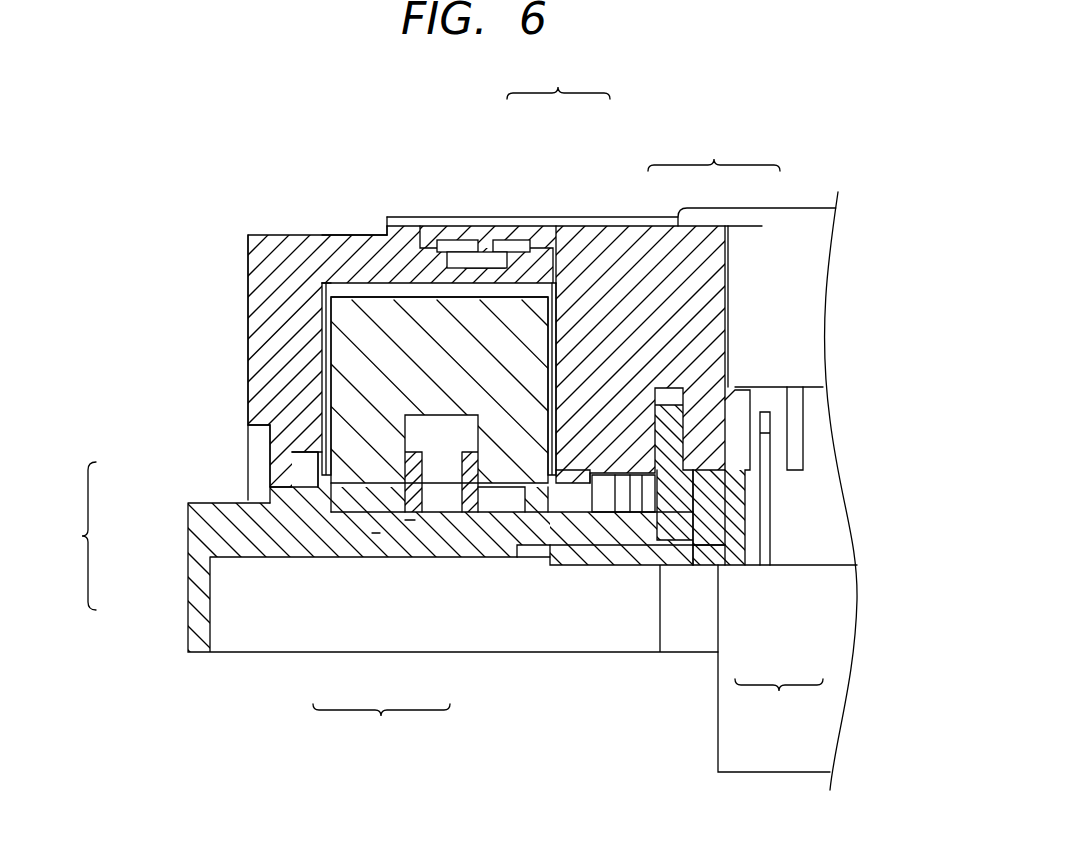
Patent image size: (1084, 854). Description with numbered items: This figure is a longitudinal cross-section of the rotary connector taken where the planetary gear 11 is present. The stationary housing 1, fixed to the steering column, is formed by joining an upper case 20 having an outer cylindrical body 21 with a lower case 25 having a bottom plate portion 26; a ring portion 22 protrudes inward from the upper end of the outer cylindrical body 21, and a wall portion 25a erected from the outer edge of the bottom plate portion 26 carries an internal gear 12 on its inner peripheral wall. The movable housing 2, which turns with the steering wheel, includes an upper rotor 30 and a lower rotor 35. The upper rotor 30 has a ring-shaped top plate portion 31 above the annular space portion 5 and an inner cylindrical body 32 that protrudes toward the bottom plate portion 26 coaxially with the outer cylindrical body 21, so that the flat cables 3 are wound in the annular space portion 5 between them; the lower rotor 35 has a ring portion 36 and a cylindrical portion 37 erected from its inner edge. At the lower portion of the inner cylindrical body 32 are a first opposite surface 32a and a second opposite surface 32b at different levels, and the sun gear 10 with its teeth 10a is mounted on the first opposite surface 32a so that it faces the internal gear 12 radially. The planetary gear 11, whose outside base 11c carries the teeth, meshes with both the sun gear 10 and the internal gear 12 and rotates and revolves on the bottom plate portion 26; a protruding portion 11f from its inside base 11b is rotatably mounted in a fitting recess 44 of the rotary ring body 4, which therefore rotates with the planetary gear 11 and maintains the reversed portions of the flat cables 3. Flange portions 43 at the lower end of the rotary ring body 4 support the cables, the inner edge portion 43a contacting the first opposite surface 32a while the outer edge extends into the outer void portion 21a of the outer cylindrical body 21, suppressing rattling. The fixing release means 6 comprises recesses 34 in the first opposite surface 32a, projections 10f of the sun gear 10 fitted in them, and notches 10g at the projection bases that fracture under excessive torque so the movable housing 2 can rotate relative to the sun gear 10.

The stationary housing 1 is at (80, 536).
The movable housing 2 is at (622, 212).
The flat cables 3 is at (556, 217).
The rotary ring body 4 is at (425, 310).
The annular space portion 5 is at (340, 283).
The fixing release means 6 is at (714, 150).
The sun gear 10 is at (690, 570).
The teeth 10a is at (545, 555).
The projections 10f is at (700, 400).
The notches 10g is at (747, 420).
The planetary gear 11 is at (381, 725).
The inside base 11b is at (410, 520).
The outside base 11c is at (372, 533).
The protruding portion 11f is at (400, 440).
The internal gear 12 is at (400, 530).
The upper case 20 is at (244, 325).
The outer cylindrical body 21 is at (248, 290).
The outer void portion 21a is at (262, 432).
The ring portion 22 is at (355, 243).
The lower case 25 is at (323, 563).
The wall portion 25a is at (282, 472).
The bottom plate portion 26 is at (480, 565).
The upper rotor 30 is at (558, 79).
The top plate portion 31 is at (518, 217).
The inner cylindrical body 32 is at (580, 217).
The first opposite surface 32a is at (618, 520).
The second opposite surface 32b is at (590, 520).
The recesses 34 is at (665, 388).
The lower rotor 35 is at (779, 699).
The ring portion 36 is at (700, 575).
The cylindrical portion 37 is at (770, 560).
The flange portions 43 is at (331, 495).
The inner edge portion 43a is at (300, 470).
The fitting recess 44 is at (378, 237).